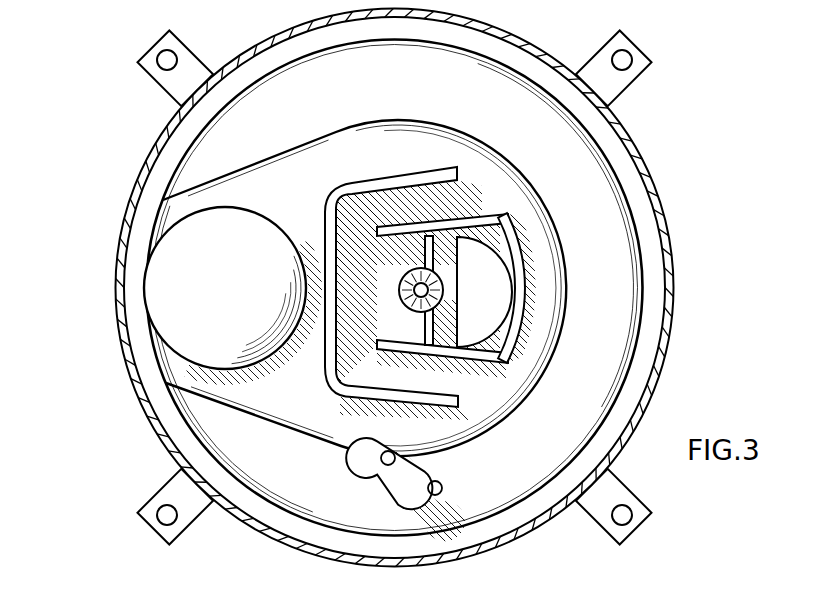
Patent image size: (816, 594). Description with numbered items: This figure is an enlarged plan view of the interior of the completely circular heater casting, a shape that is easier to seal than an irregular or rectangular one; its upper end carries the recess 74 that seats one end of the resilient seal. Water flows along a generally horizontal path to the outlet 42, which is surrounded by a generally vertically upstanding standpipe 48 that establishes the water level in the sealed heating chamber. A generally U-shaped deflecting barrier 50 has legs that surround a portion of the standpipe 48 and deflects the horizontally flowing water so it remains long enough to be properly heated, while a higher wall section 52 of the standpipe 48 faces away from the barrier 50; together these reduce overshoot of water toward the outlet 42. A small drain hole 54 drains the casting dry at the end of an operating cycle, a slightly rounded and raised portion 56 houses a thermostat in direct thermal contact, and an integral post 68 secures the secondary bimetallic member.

The recess 74 is at (657, 314).
The rounded and raised portion 56 is at (178, 294).
The deflecting barrier 50 is at (358, 183).
The standpipe 48 is at (474, 221).
The higher wall section 52 is at (517, 328).
The outlet 42 is at (495, 296).
The drain hole 54 is at (402, 289).
The post 68 is at (402, 478).